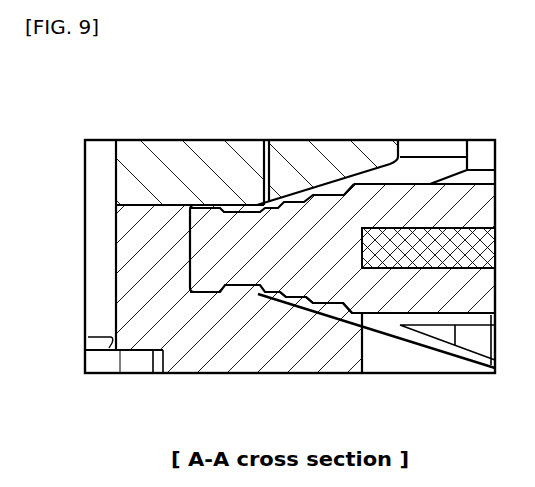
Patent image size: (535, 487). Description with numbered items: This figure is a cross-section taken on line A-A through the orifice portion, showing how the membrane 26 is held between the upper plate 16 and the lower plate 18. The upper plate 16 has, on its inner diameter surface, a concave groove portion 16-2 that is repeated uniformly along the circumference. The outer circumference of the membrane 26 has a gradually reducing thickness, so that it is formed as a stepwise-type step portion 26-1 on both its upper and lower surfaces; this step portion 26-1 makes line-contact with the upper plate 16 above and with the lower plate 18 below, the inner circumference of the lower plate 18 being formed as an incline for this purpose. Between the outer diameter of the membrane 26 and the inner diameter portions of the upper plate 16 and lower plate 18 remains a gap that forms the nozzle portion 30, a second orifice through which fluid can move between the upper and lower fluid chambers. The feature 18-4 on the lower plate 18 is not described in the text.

The upper plate 16 is at (163, 153).
The concave groove portion 16-2 is at (282, 160).
The membrane 26 is at (400, 197).
The stepwise-type step portion 26-1 is at (291, 193).
The nozzle portion 30 is at (188, 252).
The lower plate 18 is at (155, 320).
The locking protrusion 18-4 is at (357, 305).